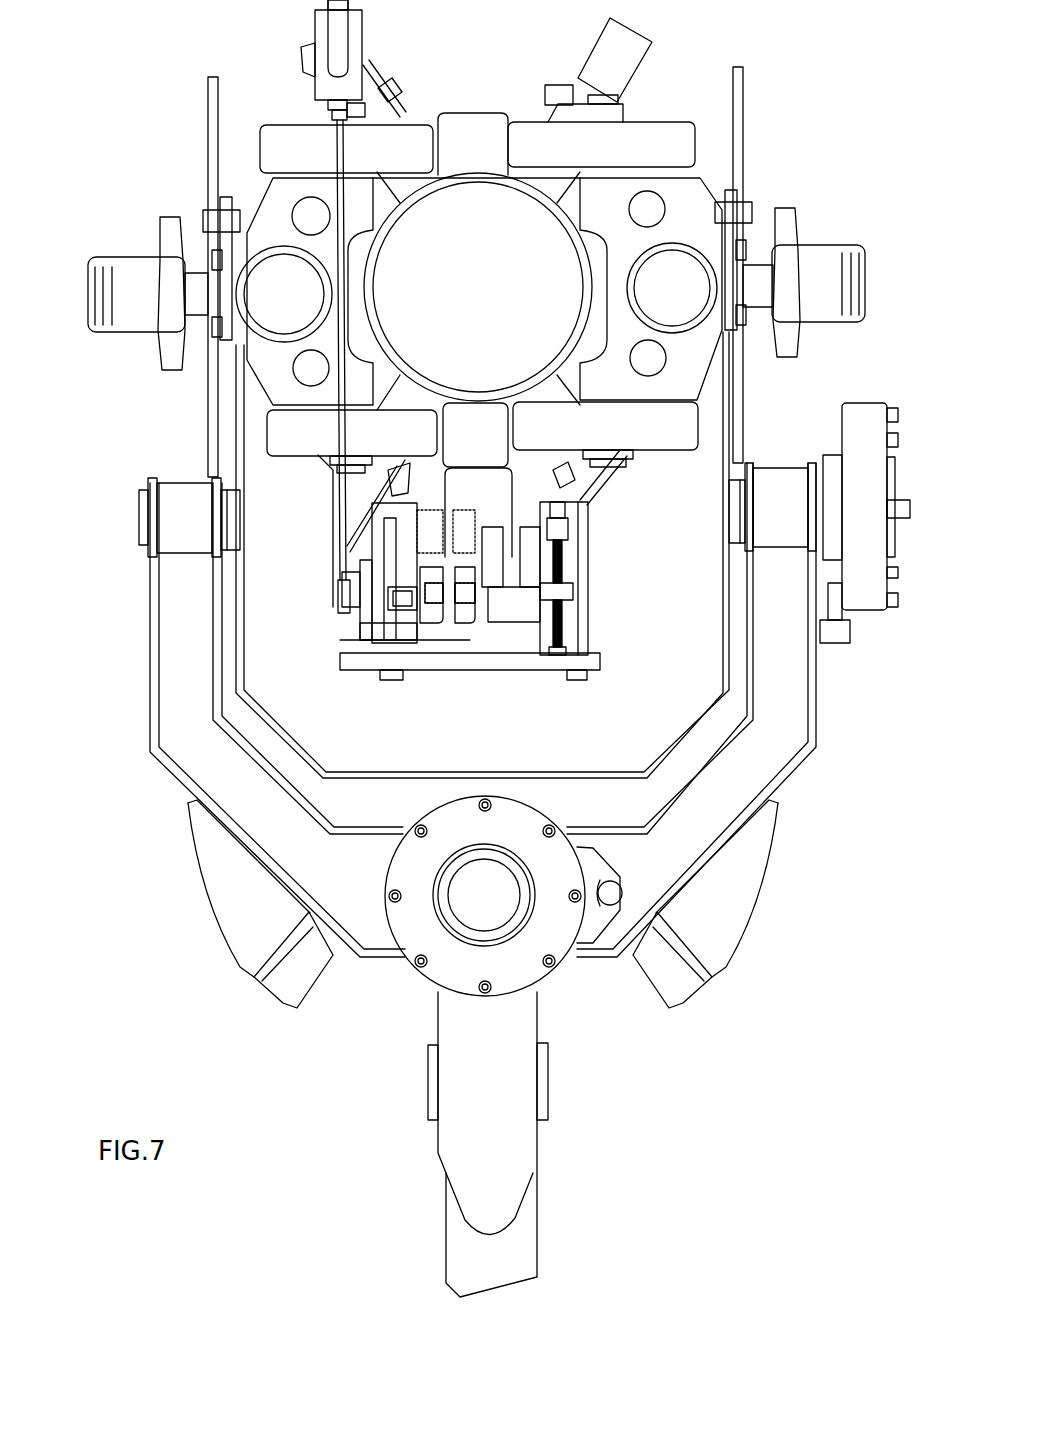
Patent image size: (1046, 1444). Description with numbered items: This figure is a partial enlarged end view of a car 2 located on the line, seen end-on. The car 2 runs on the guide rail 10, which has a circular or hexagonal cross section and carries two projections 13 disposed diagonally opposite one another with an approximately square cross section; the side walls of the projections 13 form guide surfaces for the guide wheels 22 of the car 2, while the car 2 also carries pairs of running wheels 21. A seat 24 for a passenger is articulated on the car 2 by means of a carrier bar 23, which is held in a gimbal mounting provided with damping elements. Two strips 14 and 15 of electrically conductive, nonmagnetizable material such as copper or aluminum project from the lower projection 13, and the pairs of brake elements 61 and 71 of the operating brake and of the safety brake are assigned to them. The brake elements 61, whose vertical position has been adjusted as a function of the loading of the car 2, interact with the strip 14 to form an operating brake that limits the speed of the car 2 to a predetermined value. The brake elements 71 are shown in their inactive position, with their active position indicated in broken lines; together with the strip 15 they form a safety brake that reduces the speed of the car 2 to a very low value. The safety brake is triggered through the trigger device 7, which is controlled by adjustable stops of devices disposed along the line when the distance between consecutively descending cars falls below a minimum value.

The car 2 is at (258, 378).
The trigger device 7 is at (368, 46).
The guide rail 10 is at (490, 297).
The projection 13 is at (471, 134).
The strip 14 is at (558, 540).
The strip 15 is at (450, 515).
The running wheel 21 is at (318, 60).
The guide wheel 22 is at (406, 161).
The carrier bar 23 is at (455, 1147).
The seat 24 is at (90, 298).
The first brake element 61 is at (528, 568).
The brake element 71 is at (470, 613).